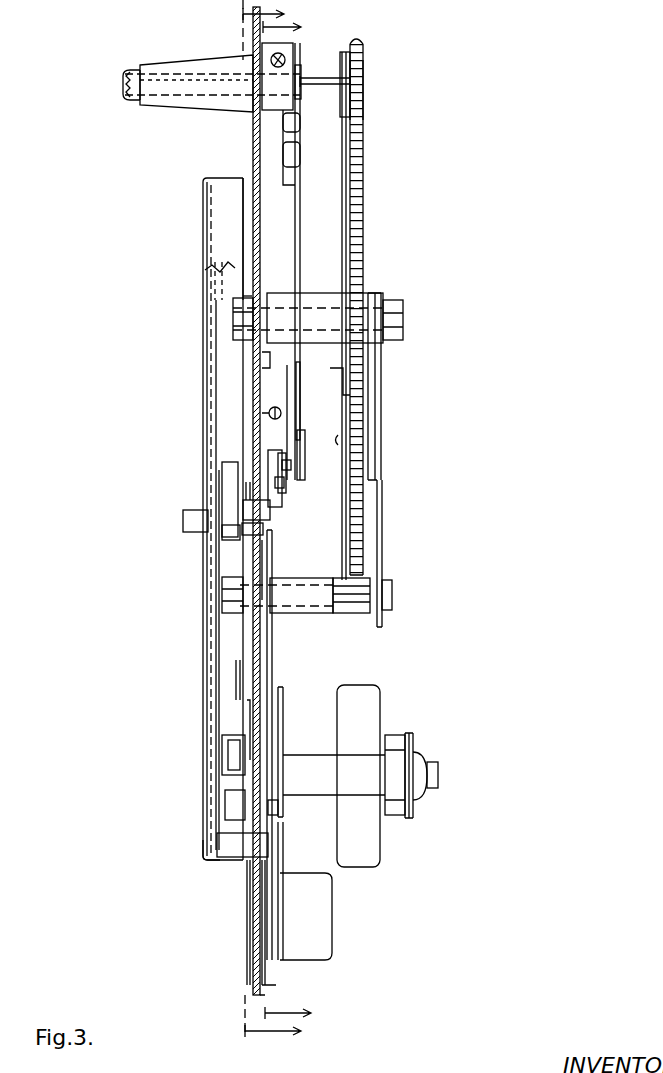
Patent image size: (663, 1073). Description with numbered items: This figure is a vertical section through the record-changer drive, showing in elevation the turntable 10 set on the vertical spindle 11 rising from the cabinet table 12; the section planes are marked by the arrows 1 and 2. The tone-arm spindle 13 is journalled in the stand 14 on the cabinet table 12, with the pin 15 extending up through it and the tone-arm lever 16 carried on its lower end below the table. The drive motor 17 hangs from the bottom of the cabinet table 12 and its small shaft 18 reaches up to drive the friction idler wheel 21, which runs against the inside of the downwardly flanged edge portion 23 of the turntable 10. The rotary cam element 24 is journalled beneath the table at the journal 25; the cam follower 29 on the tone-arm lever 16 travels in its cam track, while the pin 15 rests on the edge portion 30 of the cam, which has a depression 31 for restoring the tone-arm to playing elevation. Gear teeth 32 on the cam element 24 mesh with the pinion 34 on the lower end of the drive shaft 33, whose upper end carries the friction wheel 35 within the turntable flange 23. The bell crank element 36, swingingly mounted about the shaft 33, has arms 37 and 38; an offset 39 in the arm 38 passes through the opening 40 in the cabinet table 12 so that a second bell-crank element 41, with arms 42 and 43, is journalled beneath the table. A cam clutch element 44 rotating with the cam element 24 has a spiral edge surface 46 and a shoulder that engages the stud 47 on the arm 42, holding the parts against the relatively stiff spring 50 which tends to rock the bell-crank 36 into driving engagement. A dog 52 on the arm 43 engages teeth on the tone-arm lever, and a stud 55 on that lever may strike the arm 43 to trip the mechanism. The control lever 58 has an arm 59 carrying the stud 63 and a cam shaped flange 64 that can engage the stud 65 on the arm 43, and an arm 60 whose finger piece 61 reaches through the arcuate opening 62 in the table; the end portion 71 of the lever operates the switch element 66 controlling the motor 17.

The section line 1- 1 is at (276, 531).
The section line 2- 2 is at (293, 517).
The turntable 10 is at (196, 388).
The vertical spindle 11 is at (198, 510).
The cabinet table 12 is at (258, 222).
The tone-arm spindle 13 is at (172, 110).
The stand 14 is at (195, 105).
The pin or stud 15 is at (320, 80).
The tone-arm lever 16 is at (300, 253).
The drive motor 17 is at (393, 702).
The motor shaft 18 is at (247, 775).
The friction idler wheel 21 is at (232, 802).
The turntable flange 23 is at (207, 276).
The rotary cam element 24 is at (373, 275).
The journal 25 is at (333, 296).
The cam follower 29 is at (345, 395).
The edge portion of cam element 30 is at (342, 440).
The depression 31 is at (354, 97).
The gear teeth 32 is at (350, 493).
The drive shaft 33 is at (303, 608).
The pinion 34 is at (355, 615).
The friction wheel 35 is at (227, 532).
The bell crank element 36 is at (231, 679).
The arm of bell-crank 36 37 is at (247, 700).
The arm of bell-crank 36 38 is at (283, 494).
The offset 39 is at (272, 512).
The opening 40 is at (247, 490).
The bell-crank element 41 is at (300, 402).
The arm of bell-crank 41 42 is at (256, 384).
The arm of bell-crank 41 43 is at (275, 445).
The cam clutch element 44 is at (243, 236).
The spiral edge surface 46 is at (262, 280).
The stud 47 is at (265, 353).
The stiff spring 50 is at (262, 418).
The dog 52 is at (315, 428).
The stud 55 is at (288, 466).
The control lever 58 is at (282, 663).
The arm of lever 58 59 is at (270, 560).
The arm of lever 58 60 is at (275, 806).
The finger piece 61 is at (212, 852).
The arcuate opening 62 is at (257, 880).
The stud 63 is at (242, 535).
The cam shaped flange 64 is at (245, 488).
The stud 65 is at (280, 484).
The switch element 66 is at (296, 734).
The end portion of lever arm 71 is at (270, 985).